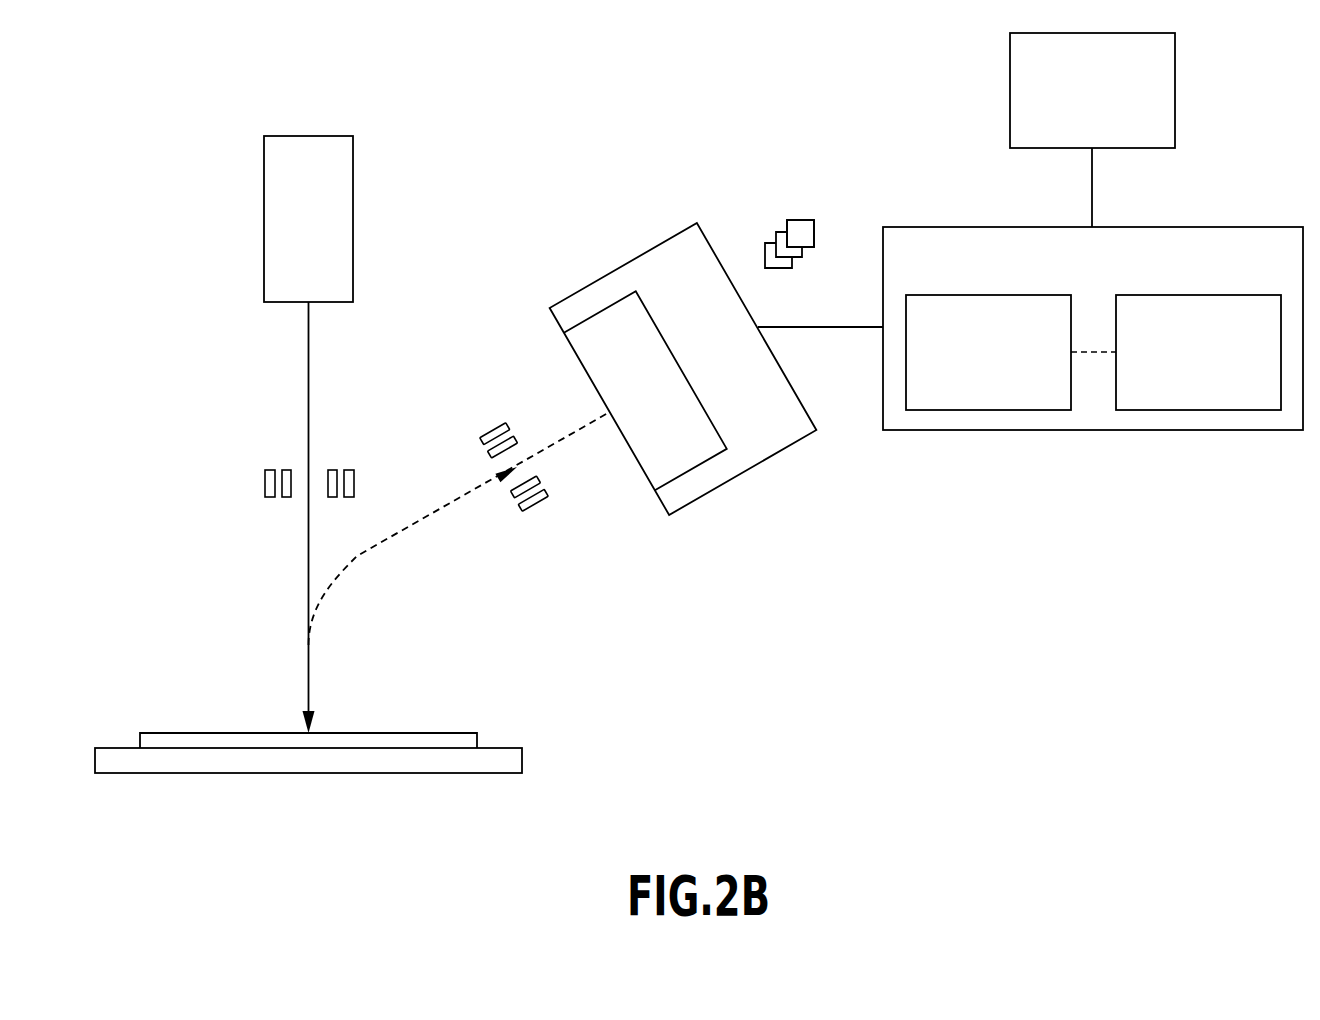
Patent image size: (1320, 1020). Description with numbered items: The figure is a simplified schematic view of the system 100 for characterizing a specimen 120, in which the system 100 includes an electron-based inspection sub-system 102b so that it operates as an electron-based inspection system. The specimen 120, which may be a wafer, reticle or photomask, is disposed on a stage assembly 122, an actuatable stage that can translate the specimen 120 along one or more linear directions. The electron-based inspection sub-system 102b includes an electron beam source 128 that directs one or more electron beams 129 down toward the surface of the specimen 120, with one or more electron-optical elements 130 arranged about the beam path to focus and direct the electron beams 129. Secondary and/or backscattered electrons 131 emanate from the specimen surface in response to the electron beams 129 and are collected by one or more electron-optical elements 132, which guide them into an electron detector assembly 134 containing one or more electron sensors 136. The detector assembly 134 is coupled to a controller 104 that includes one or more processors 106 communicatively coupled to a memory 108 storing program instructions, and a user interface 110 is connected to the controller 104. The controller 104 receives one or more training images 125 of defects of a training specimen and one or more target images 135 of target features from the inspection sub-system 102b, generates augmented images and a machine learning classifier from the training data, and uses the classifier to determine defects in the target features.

The system 100 is at (197, 86).
The electron-based inspection sub-system 102b is at (136, 334).
The controller 104 is at (926, 256).
The processors 106 is at (948, 322).
The memory 108 is at (1158, 322).
The user interface 110 is at (1053, 60).
The specimen 120 is at (477, 743).
The stage assembly 122 is at (522, 762).
The training images 125 is at (751, 229).
The electron beam source 128 is at (290, 230).
The electron beams 129 is at (310, 365).
The electron-optical elements 130 is at (264, 481).
The secondary and/or backscattered electrons 131 is at (356, 558).
The electron-optical elements 132 is at (538, 508).
The electron detector assembly 134 is at (716, 369).
The target images 135 is at (839, 229).
The electron sensors 136 is at (645, 390).